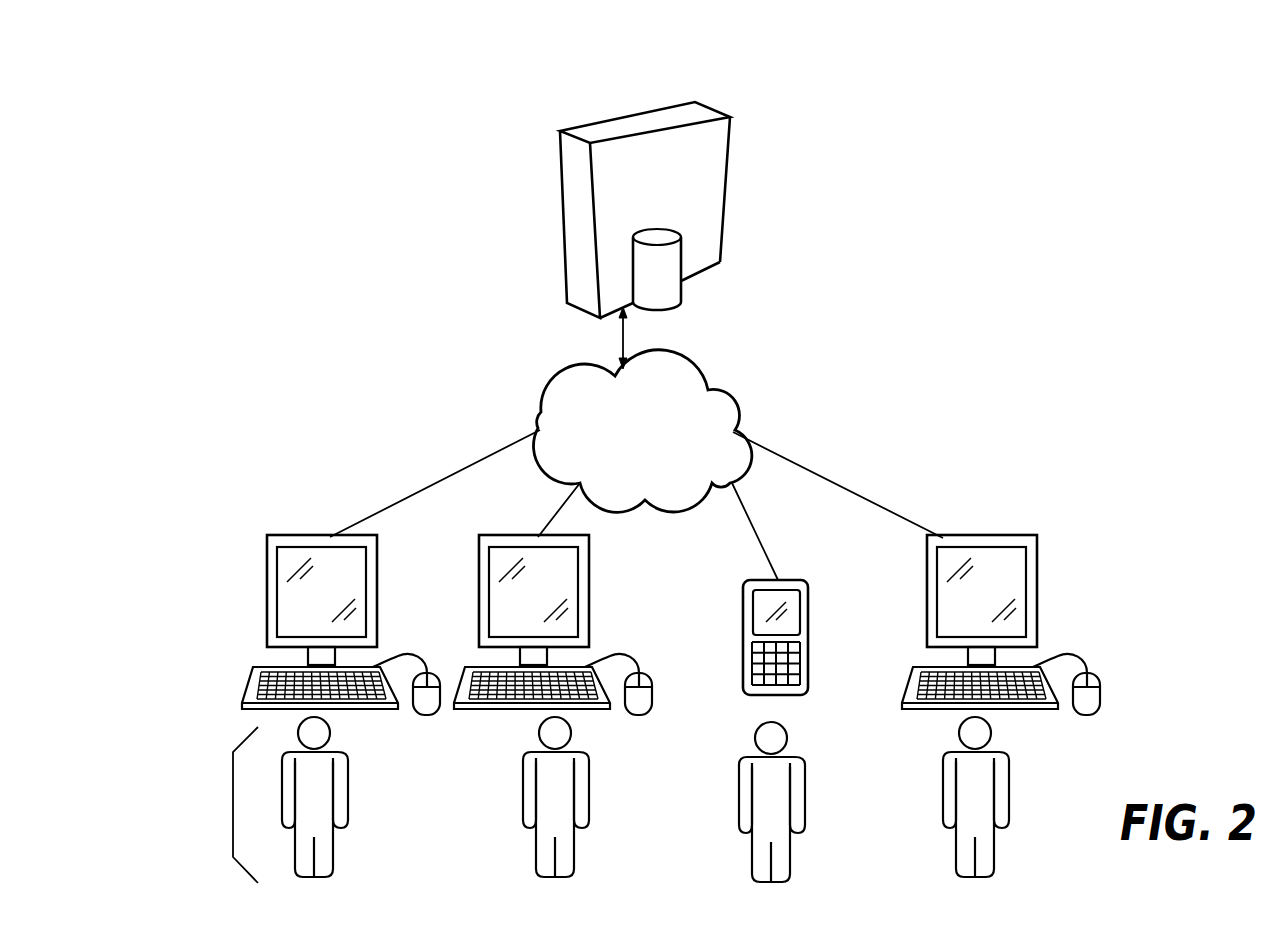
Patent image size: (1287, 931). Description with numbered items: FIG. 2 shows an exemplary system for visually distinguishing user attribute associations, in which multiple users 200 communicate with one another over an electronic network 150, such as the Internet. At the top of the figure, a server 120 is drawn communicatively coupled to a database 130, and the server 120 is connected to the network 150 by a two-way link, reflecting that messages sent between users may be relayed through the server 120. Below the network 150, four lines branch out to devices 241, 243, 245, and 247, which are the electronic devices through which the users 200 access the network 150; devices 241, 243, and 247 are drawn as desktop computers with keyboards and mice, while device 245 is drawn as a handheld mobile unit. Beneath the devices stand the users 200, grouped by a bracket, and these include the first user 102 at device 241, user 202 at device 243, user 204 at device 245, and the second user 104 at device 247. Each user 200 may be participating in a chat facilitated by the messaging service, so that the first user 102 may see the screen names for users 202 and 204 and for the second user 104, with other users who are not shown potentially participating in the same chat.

The server 120 is at (590, 123).
The database 130 is at (672, 293).
The electronic network 150 is at (735, 401).
The device 241 is at (267, 562).
The device 243 is at (479, 562).
The device 245 is at (747, 582).
The device 247 is at (927, 567).
The users 200 is at (233, 798).
The first user 102 is at (330, 877).
The user 202 is at (572, 878).
The user 204 is at (787, 882).
The second user 104 is at (1008, 758).